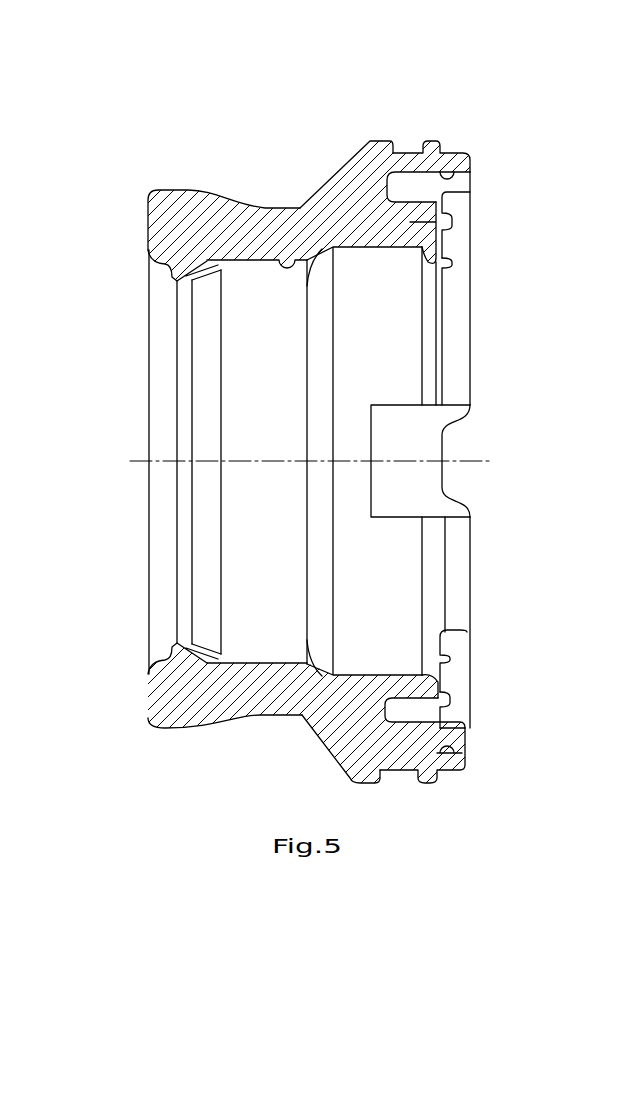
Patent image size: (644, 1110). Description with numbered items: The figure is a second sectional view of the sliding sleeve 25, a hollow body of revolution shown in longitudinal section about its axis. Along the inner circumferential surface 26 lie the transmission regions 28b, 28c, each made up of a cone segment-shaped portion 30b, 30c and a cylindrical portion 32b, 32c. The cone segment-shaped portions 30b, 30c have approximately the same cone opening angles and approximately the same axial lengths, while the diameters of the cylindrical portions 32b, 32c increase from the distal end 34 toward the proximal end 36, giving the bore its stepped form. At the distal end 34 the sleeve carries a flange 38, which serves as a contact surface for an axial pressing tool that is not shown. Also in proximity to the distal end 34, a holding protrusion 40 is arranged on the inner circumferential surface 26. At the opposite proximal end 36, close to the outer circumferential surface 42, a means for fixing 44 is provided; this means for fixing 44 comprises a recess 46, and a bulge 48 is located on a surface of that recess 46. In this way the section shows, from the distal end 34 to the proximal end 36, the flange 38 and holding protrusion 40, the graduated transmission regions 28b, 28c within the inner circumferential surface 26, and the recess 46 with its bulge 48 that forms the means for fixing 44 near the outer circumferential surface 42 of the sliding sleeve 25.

The sliding sleeve 25 is at (512, 703).
The inner circumferential surface 26 is at (278, 345).
The transmission region 28b is at (322, 285).
The transmission region 28c is at (440, 272).
The cone segment-shaped portion 30b is at (312, 273).
The cone segment-shaped portion 30c is at (446, 255).
The cylindrical portion 32b is at (287, 262).
The cylindrical portion 32c is at (412, 250).
The distal end 34 is at (128, 390).
The proximal end 36 is at (488, 390).
The flange 38 is at (168, 196).
The holding protrusion 40 is at (176, 277).
The outer circumferential surface 42 is at (300, 148).
The means for fixing 44 is at (490, 170).
The recess 46 is at (430, 186).
The bulge 48 is at (450, 168).